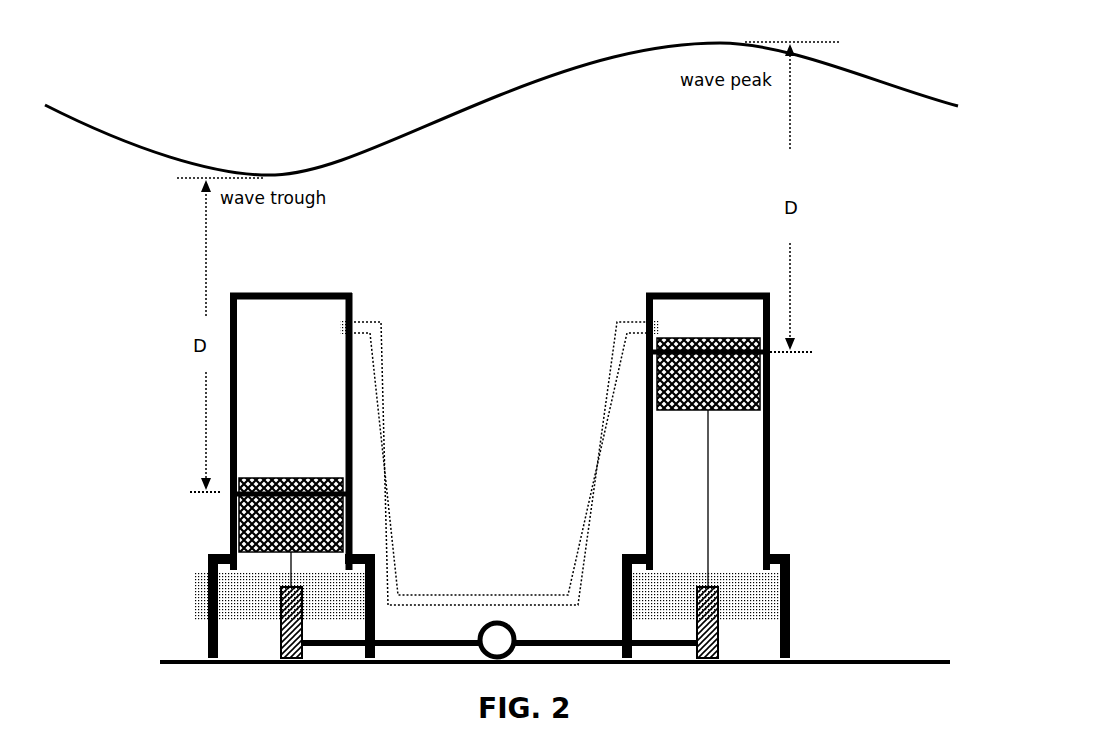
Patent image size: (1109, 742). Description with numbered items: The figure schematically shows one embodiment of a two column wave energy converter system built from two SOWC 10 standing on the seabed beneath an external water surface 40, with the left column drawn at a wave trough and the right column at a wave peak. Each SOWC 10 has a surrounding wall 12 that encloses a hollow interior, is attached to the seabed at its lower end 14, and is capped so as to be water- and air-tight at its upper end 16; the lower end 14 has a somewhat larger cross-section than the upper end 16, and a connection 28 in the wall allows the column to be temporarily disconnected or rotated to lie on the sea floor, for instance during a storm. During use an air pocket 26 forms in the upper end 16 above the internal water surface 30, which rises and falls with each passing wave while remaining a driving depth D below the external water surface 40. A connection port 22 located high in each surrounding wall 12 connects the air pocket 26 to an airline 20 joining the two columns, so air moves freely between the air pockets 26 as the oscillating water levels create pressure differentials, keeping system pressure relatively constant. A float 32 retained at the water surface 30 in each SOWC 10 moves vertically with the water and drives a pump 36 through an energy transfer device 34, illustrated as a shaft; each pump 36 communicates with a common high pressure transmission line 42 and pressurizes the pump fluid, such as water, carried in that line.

The submerged oscillating water column (SOWC) 10 is at (190, 303).
The surrounding wall 12 is at (353, 305).
The lower end 14 is at (210, 656).
The upper end 16 is at (272, 295).
The airline 20 is at (386, 398).
The connection port 22 is at (352, 322).
The air pocket 26 is at (295, 318).
The connection 28 is at (215, 556).
The water surface 30 is at (192, 492).
The float 32 is at (285, 478).
The energy transfer device 34 is at (290, 560).
The pump 36 is at (282, 640).
The water surface 40 is at (363, 152).
The high pressure transmission line 42 is at (497, 618).